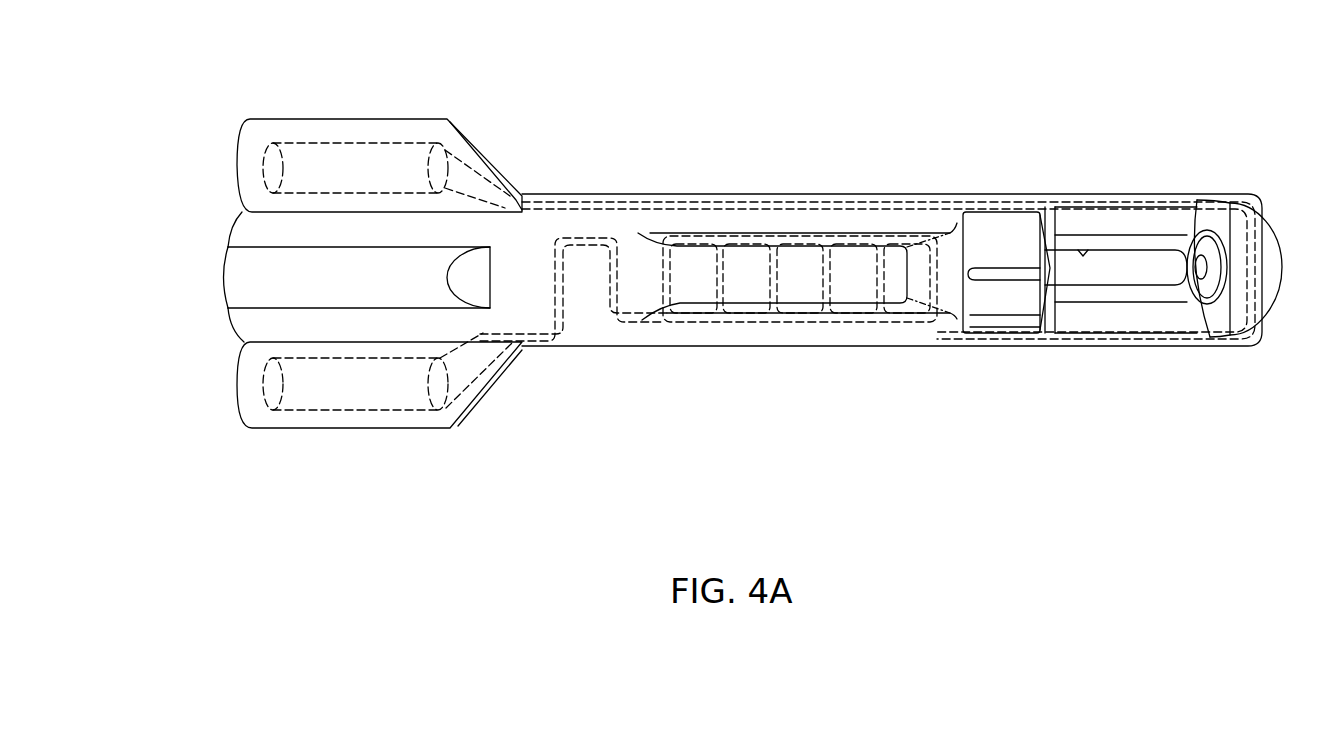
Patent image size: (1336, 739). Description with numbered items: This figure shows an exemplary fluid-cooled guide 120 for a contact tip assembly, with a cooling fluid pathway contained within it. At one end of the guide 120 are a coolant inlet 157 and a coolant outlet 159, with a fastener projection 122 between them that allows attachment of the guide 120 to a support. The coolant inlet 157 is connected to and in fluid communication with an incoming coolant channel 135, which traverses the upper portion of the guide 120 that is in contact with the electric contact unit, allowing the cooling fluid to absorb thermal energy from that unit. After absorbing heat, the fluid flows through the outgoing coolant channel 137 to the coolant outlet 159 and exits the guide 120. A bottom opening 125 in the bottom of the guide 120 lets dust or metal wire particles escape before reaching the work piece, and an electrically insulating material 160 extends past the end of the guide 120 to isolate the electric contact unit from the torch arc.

The guide 120 is at (840, 222).
The fastener projection 122 is at (263, 277).
The bottom opening 125 is at (1113, 250).
The incoming coolant channel 135 is at (747, 322).
The outgoing coolant channel 137 is at (718, 203).
The coolant inlet 157 is at (352, 410).
The coolant outlet 159 is at (348, 143).
The electrically insulating material 160 is at (1210, 200).